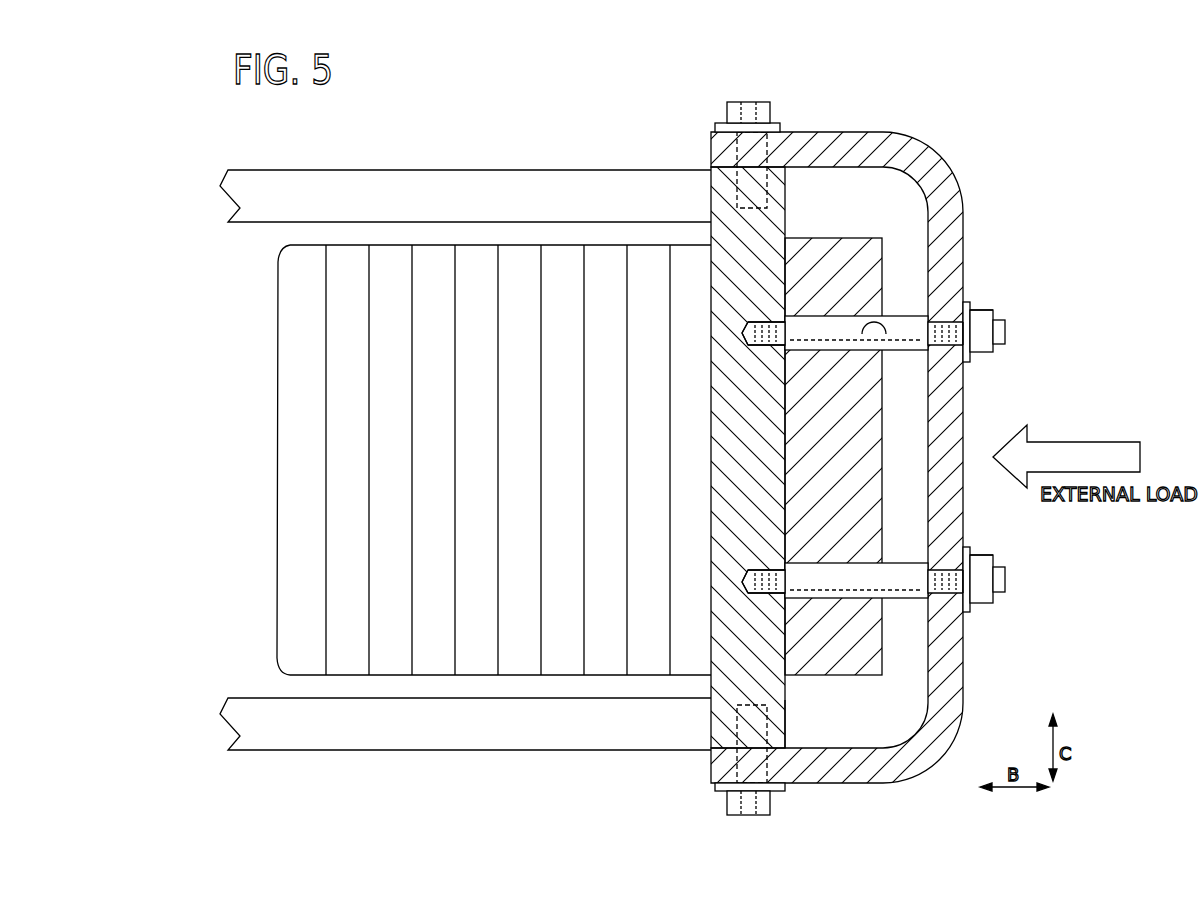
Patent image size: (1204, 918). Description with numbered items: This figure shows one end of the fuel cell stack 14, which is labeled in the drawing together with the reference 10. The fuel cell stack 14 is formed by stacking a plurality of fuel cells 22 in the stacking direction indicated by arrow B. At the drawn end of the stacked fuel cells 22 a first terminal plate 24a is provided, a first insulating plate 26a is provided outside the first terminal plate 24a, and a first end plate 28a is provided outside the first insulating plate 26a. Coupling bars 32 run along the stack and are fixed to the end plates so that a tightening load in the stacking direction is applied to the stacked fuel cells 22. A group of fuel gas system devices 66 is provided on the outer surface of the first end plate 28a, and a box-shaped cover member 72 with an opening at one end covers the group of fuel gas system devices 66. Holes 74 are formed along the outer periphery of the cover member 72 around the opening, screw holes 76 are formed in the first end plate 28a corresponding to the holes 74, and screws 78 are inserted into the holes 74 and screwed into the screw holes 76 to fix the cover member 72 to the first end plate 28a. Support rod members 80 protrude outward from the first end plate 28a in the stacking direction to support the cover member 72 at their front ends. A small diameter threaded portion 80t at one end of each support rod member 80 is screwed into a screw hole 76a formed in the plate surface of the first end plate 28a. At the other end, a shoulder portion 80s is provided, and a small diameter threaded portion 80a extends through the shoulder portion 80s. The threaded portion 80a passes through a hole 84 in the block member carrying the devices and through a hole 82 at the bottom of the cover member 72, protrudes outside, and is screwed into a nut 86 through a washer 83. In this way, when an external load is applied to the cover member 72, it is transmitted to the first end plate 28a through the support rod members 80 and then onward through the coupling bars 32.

The fuel cell stack 14 is at (396, 114).
The battery pack 10 is at (432, 114).
The coupling bars 32 is at (512, 186).
The fuel cells 22 is at (518, 660).
The first terminal plate 24a is at (652, 665).
The first insulating plate 26a is at (691, 665).
The first end plate 28a is at (790, 732).
The cover member 72 is at (926, 156).
The screw holes 76 is at (710, 184).
The screw hole 76a is at (745, 327).
The group of fuel gas system devices 66 is at (871, 238).
The support rod members 80 is at (909, 325).
The small diameter threaded portion 80a is at (1005, 330).
The shoulder portion 80s is at (967, 308).
The small diameter threaded portion 80t is at (740, 333).
The holes 82 is at (968, 357).
The washer 83 is at (993, 313).
The holes 84 is at (877, 333).
The nut 86 is at (993, 350).
The holes 74 is at (745, 124).
The screws 78 is at (766, 101).